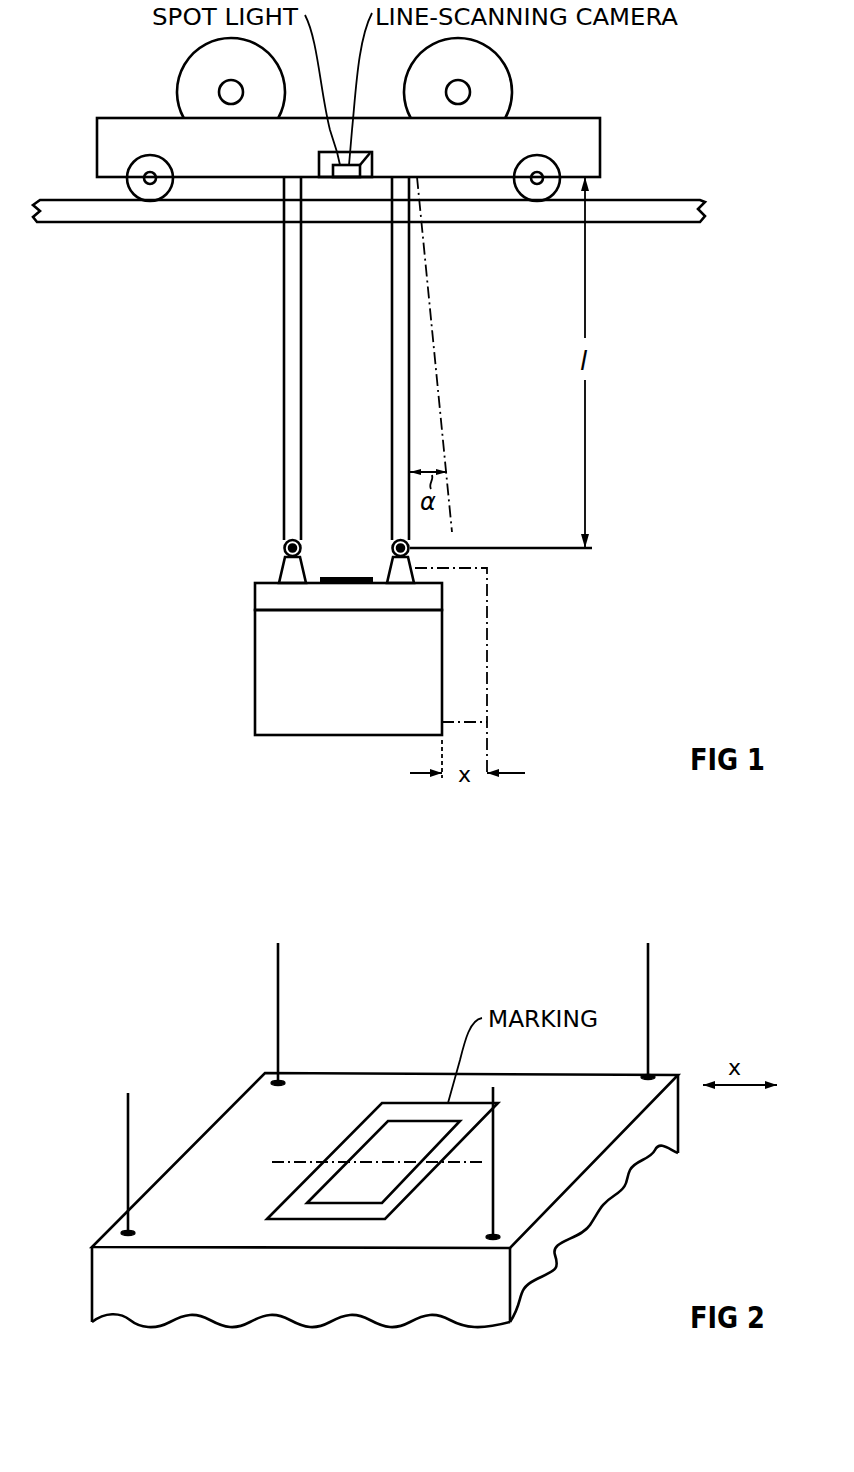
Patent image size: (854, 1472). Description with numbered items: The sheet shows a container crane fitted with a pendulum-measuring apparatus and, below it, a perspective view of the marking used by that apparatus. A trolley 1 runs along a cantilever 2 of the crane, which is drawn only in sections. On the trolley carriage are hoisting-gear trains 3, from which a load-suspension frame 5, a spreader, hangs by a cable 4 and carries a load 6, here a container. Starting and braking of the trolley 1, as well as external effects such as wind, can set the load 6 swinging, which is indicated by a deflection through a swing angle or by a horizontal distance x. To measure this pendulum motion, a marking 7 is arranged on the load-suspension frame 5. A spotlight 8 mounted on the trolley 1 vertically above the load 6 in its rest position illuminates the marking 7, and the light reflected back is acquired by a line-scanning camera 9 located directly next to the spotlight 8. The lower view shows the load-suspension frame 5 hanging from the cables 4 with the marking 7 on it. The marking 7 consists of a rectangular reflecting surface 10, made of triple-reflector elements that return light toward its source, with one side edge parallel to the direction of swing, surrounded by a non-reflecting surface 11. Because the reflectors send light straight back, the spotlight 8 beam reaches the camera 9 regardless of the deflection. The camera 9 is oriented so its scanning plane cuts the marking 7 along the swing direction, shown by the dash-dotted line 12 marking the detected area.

In FIG. 1, the trolley 1 is at (97, 143).
In FIG. 1, the cantilever 2 is at (647, 208).
In FIG. 1, the hoisting-gear trains 3 is at (181, 79).
In FIG. 1, the cable 4 is at (301, 417).
In FIG. 2, the cable 4 is at (278, 1012).
In FIG. 1, the load-suspension frame 5 is at (266, 597).
In FIG. 2, the load-suspension frame 5 is at (228, 1130).
In FIG. 1, the load 6 is at (271, 667).
In FIG. 1, the marking 7 is at (344, 577).
In FIG. 2, the marking 7 is at (428, 1103).
In FIG. 1, the spotlight 8 is at (319, 158).
In FIG. 1, the line-scanning camera 9 is at (372, 152).
In FIG. 2, the reflecting surface 10 is at (383, 1180).
In FIG. 2, the non-reflecting surface 11 is at (295, 1206).
In FIG. 2, the dash-dotted line 12 is at (290, 1160).